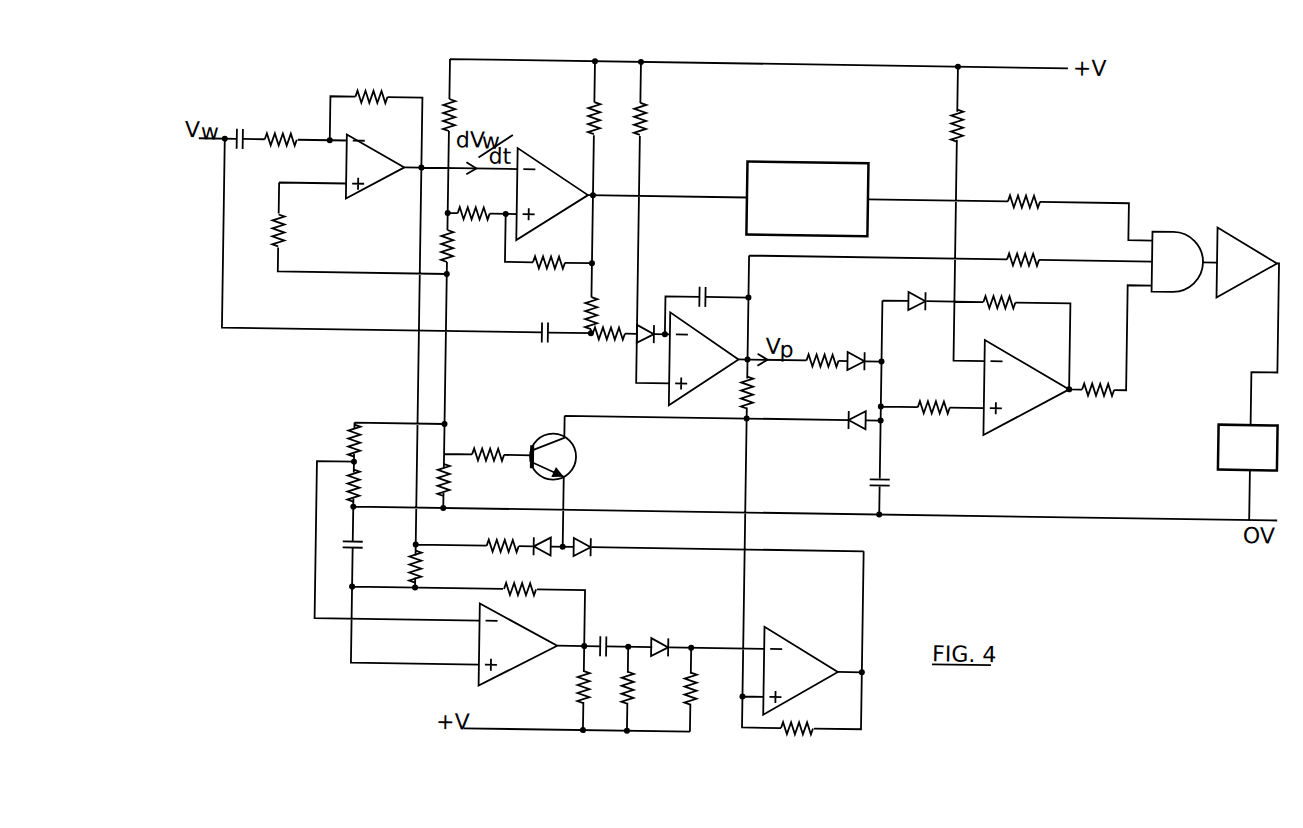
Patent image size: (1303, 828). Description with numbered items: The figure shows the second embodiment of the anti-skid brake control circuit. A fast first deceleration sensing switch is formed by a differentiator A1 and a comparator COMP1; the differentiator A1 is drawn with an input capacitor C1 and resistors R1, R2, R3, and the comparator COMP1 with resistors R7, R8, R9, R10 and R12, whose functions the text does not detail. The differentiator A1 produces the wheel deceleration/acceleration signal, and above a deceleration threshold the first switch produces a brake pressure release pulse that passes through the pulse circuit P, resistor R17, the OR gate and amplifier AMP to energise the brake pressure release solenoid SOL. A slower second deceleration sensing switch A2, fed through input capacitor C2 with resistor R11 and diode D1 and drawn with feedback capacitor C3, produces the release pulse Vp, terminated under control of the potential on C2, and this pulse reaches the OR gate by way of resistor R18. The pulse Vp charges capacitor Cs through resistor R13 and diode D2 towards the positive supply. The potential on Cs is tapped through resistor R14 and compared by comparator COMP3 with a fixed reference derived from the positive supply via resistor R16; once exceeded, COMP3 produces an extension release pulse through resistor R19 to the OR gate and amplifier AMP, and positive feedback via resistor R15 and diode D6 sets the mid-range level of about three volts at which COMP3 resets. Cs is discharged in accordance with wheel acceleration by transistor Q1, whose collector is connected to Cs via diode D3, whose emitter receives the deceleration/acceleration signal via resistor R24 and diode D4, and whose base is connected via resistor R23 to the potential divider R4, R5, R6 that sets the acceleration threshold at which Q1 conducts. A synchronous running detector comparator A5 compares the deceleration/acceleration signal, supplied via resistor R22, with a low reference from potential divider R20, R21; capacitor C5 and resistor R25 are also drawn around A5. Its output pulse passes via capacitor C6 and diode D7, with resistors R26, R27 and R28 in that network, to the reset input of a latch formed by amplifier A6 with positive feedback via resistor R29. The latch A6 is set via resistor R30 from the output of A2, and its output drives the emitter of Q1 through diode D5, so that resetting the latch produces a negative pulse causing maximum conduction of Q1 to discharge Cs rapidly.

The capacitor C1 is at (242, 127).
The resistor R1 is at (281, 125).
The resistor R2 is at (294, 230).
The resistor R3 is at (371, 85).
The differentiator A1 is at (384, 176).
The potential divider resistor R4 is at (466, 116).
The potential divider resistor R5 is at (464, 246).
The resistor R9 is at (474, 201).
The resistor R7 is at (548, 274).
The comparator COMP1 is at (547, 192).
The resistor R8 is at (579, 118).
The resistor R12 is at (663, 120).
The resistor R10 is at (571, 313).
The input capacitor C2 is at (542, 345).
The resistor R11 is at (614, 347).
The diode D1 is at (652, 346).
The second deceleration sensing switch A2 is at (714, 367).
The capacitor C3 is at (703, 287).
The resistor R30 is at (771, 392).
The resistor R13 is at (827, 373).
The diode D2 is at (860, 351).
The diode D3 is at (859, 432).
The resistor R14 is at (939, 422).
The capacitor Cs is at (895, 487).
The diode D6 is at (921, 289).
The positive feedback resistor R15 is at (1002, 315).
The resistor R16 is at (982, 126).
The pulse circuit P is at (814, 201).
The resistor R17 is at (1030, 188).
The resistor R18 is at (1029, 246).
The comparator COMP3 is at (1030, 378).
The resistor R19 is at (1104, 379).
The OR gate OR is at (1192, 263).
The amplifier AMP is at (1262, 263).
The brake pressure release solenoid SOL is at (1272, 448).
The potential divider resistor R20 is at (331, 440).
The potential divider resistor R21 is at (376, 486).
The capacitor C5 is at (368, 545).
The resistor R22 is at (437, 566).
The potential divider resistor R6 is at (459, 480).
The resistor R23 is at (490, 443).
The transistor Q1 is at (573, 456).
The resistor R24 is at (504, 534).
The diode D4 is at (543, 558).
The diode D5 is at (588, 559).
The resistor R25 is at (524, 602).
The comparator A5 is at (534, 650).
The resistor R26 is at (560, 686).
The capacitor C6 is at (603, 634).
The diode D7 is at (666, 634).
The resistor R27 is at (649, 688).
The resistor R28 is at (712, 689).
The latch amplifier A6 is at (816, 676).
The positive feedback resistor R29 is at (807, 716).